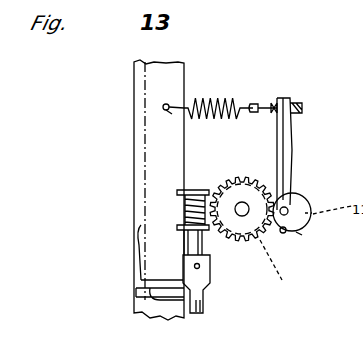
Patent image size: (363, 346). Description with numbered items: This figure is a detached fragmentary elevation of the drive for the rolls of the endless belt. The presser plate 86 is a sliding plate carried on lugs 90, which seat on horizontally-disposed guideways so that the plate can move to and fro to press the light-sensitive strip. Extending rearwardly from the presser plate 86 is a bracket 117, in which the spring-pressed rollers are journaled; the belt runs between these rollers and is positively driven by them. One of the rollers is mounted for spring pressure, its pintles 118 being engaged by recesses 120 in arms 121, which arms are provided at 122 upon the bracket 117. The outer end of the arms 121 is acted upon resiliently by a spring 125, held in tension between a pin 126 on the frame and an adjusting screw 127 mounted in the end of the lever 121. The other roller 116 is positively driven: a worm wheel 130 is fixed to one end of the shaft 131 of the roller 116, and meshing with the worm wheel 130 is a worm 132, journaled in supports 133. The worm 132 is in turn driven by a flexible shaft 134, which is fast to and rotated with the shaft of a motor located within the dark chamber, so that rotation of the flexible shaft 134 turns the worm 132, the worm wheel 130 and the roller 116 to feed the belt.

The presser plate 86 is at (134, 151).
The lugs 90 is at (140, 301).
The roller 116 is at (282, 269).
The bracket 117 is at (305, 232).
The pintles 118 is at (305, 210).
The recesses 120 is at (288, 208).
The arms 121 is at (288, 153).
The arm mounting 122 is at (284, 234).
The springs 125 is at (232, 73).
The pin 126 is at (163, 107).
The adjusting screw 127 is at (266, 103).
The worm wheel 130 is at (222, 238).
The shaft 131 is at (243, 207).
The worm 132 is at (184, 204).
The supports 133 is at (193, 188).
The flexible shaft 134 is at (203, 306).